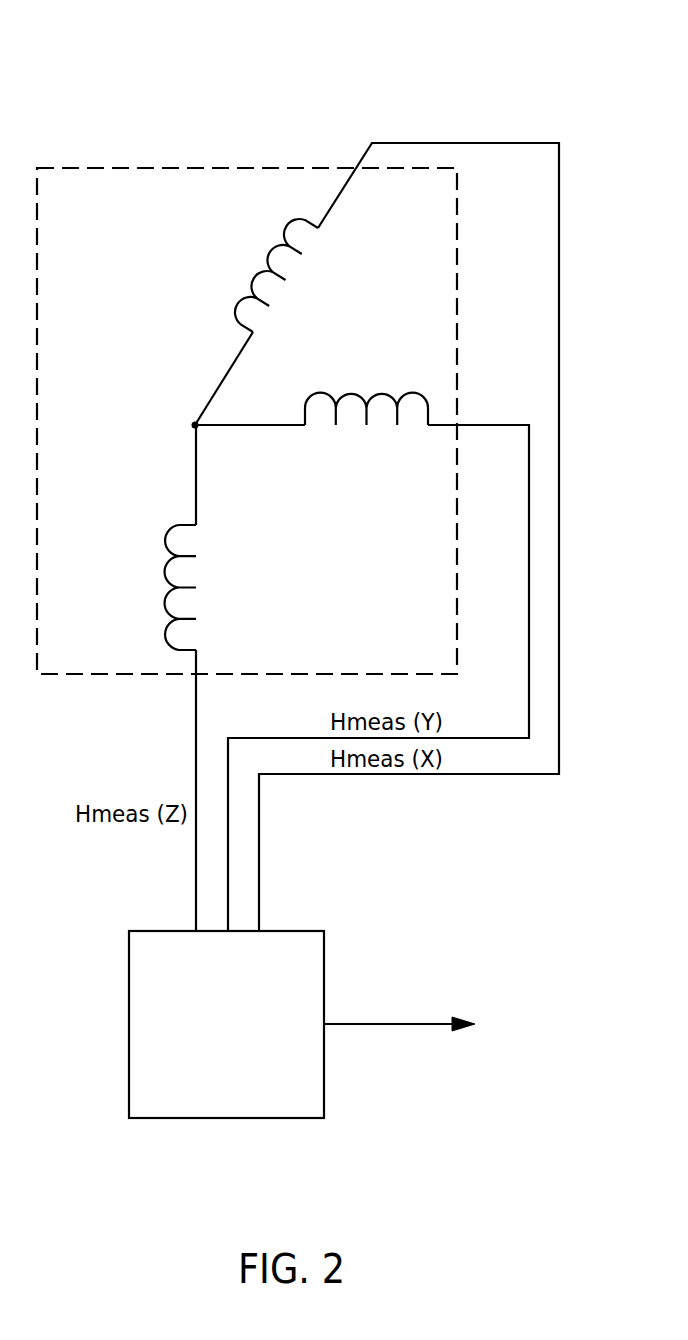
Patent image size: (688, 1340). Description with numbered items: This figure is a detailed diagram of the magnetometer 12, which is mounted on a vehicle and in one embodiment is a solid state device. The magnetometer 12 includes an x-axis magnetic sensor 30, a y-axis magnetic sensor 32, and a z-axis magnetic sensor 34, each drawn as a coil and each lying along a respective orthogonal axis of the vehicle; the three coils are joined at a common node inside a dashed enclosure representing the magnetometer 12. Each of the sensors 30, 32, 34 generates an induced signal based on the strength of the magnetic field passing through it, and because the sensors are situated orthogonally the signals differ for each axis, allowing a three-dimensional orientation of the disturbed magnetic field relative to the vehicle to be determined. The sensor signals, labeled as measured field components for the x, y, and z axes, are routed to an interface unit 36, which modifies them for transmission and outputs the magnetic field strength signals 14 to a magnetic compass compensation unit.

The magnetometer 12 is at (273, 71).
The x-axis magnetic sensor 30 is at (252, 276).
The y-axis magnetic sensor 32 is at (352, 392).
The z-axis magnetic sensor 34 is at (178, 523).
The interface unit 36 is at (292, 930).
The magnetic field strength signals 14 is at (363, 1025).